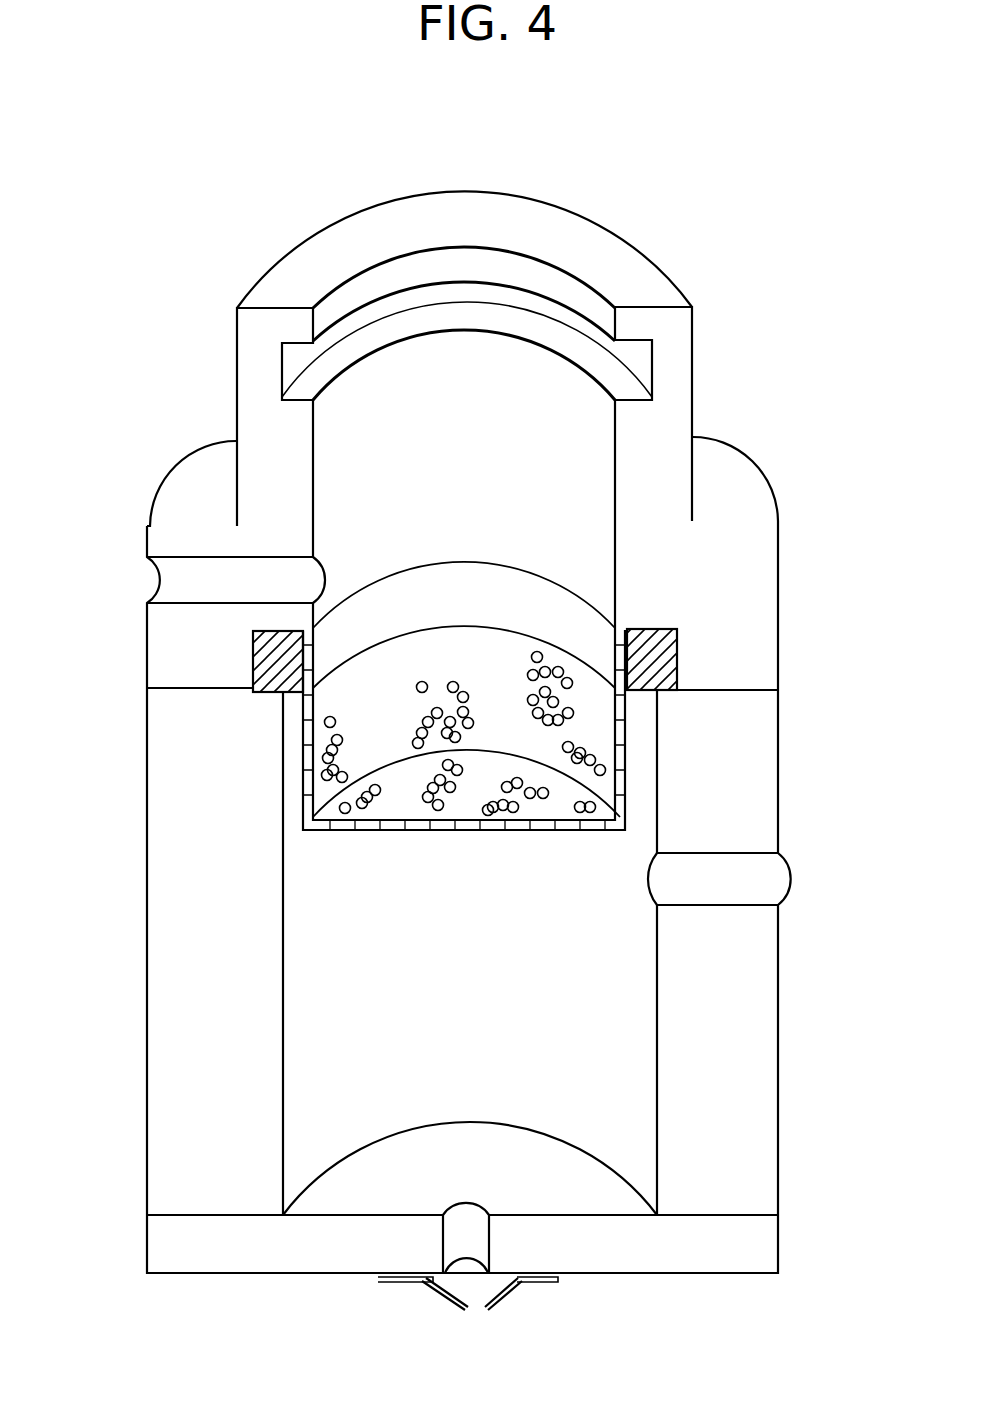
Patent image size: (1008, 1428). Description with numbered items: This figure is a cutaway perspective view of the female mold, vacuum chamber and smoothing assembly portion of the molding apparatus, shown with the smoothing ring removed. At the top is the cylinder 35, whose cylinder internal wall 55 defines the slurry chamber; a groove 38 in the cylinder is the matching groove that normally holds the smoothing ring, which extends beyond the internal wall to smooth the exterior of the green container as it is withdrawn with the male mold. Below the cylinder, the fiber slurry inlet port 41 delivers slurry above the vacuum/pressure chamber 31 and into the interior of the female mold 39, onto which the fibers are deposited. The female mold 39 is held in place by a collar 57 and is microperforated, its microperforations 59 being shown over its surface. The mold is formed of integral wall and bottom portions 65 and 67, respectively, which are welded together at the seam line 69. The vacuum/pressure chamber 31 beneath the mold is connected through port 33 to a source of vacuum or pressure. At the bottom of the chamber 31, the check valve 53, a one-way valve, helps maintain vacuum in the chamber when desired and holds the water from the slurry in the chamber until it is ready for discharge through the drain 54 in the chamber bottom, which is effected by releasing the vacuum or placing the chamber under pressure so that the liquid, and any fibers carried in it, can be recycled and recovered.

The vacuum/pressure chamber 31 is at (300, 993).
The port 33 is at (742, 880).
The cylinder 35 is at (777, 570).
The groove 38 is at (292, 367).
The female mold 39 is at (303, 765).
The fiber slurry inlet port 41 is at (178, 582).
The check valve 53 is at (428, 1292).
The drain 54 is at (463, 1212).
The cylinder internal wall 55 is at (613, 460).
The collar 57 is at (252, 657).
The microperforations 59 is at (600, 770).
The wall portion 65 is at (347, 708).
The bottom portion 67 is at (533, 803).
The seam line 69 is at (347, 790).